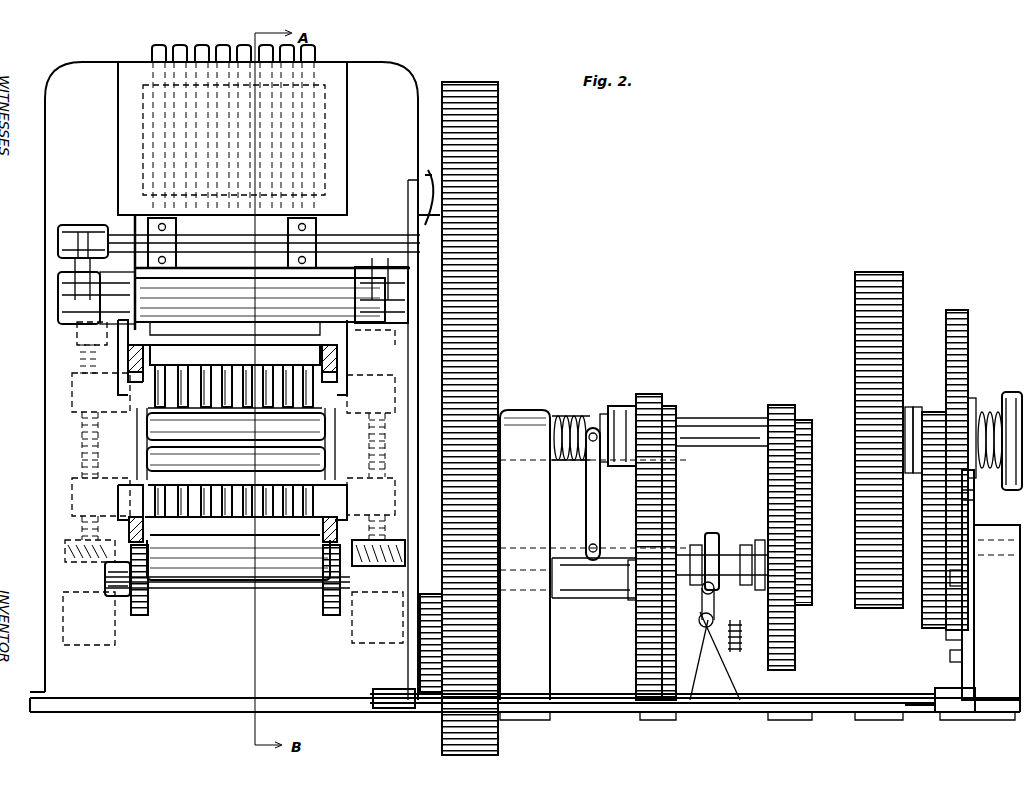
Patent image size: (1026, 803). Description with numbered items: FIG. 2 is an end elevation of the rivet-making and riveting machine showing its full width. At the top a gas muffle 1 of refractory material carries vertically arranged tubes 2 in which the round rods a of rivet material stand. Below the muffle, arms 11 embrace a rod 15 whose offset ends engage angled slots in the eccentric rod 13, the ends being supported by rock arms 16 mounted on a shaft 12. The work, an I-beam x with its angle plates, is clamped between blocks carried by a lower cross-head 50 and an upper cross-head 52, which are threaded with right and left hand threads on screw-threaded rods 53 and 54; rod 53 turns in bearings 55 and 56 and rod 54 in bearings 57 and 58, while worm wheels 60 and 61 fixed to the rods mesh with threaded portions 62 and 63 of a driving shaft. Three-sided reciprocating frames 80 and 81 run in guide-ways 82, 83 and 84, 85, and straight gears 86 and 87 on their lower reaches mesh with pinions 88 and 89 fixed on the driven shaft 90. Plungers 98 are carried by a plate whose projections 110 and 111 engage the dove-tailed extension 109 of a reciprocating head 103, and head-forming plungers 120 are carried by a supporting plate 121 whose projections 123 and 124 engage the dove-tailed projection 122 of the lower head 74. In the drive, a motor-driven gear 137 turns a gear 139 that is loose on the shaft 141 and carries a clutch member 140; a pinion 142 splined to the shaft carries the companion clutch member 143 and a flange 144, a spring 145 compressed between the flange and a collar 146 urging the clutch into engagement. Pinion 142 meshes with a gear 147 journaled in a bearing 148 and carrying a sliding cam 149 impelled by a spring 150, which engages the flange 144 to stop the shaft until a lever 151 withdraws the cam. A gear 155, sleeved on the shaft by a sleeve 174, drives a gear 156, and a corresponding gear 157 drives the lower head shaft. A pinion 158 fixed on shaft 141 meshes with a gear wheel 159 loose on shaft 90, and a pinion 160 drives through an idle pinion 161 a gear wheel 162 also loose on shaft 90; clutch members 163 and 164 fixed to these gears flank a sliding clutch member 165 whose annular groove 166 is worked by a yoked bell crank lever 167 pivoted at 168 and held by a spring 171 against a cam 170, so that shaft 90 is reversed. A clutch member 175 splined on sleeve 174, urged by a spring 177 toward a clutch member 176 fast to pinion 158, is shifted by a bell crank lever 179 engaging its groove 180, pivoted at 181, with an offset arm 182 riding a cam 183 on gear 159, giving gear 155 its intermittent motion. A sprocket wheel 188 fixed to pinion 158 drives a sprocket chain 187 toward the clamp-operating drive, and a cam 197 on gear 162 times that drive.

The gas muffle 1 is at (345, 160).
The tubes 2 is at (233, 120).
The arms 11 is at (186, 262).
The shaft 12 is at (236, 318).
The eccentric rod 13 is at (418, 215).
The rod 15 is at (345, 240).
The rock arms 16 is at (405, 300).
The cross-head 50 is at (72, 498).
The cross-head 52 is at (72, 392).
The screw-threaded rod 53 is at (80, 462).
The screw-threaded rod 54 is at (385, 445).
The bearing 55 is at (77, 335).
The bearing 56 is at (63, 605).
The bearing 57 is at (395, 338).
The bearing 58 is at (500, 628).
The worm wheel 60 is at (65, 550).
The worm wheel 61 is at (385, 527).
The threaded portion 62 is at (80, 526).
The threaded portion 63 is at (395, 495).
The head 74 is at (272, 545).
The reciprocating frame 80 is at (337, 358).
The reciprocating frame 81 is at (128, 358).
The guide-way 82 is at (337, 395).
The guide-way 83 is at (340, 500).
The guide-way 84 is at (128, 395).
The guide-way 85 is at (119, 502).
The straight gear 86 is at (312, 578).
The straight gear 87 is at (105, 578).
The pinion 88 is at (330, 615).
The pinion 89 is at (138, 615).
The driven shaft 90 is at (250, 588).
The plungers 98 is at (222, 412).
The head 103 is at (190, 330).
The dove-tailed extension 109 is at (255, 365).
The projection 110 is at (150, 350).
The projection 111 is at (312, 350).
The plungers 120 is at (240, 485).
The supporting plate 121 is at (225, 540).
The dove-tailed projection 122 is at (200, 540).
The projection 123 is at (163, 555).
The projection 124 is at (305, 540).
The gear 137 is at (960, 310).
The gear 139 is at (885, 262).
The clutch member 140 is at (909, 407).
The shaft 141 is at (705, 418).
The pinion 142 is at (930, 412).
The clutch member 143 is at (918, 407).
The flange 144 is at (972, 398).
The spring 145 is at (990, 412).
The collar 146 is at (1010, 392).
The gear 147 is at (946, 635).
The bearing 148 is at (990, 525).
The sliding cam 149 is at (950, 656).
The spring 150 is at (962, 578).
The lever 151 is at (974, 500).
The gear 155 is at (550, 395).
The gear 156 is at (498, 190).
The gear 157 is at (498, 742).
The pinion 158 is at (648, 394).
The gear wheel 159 is at (598, 468).
The pinion 160 is at (786, 392).
The idle pinion 161 is at (812, 495).
The gear wheel 162 is at (795, 665).
The clutch member 163 is at (742, 640).
The clutch member 164 is at (690, 615).
The sliding clutch member 165 is at (696, 545).
The annular groove 166 is at (712, 533).
The yoked bell crank lever 167 is at (720, 656).
The pivot 168 is at (703, 660).
The cam 170 is at (746, 545).
The spring 171 is at (728, 700).
The sleeve 174 is at (535, 460).
The clutch member 175 is at (608, 412).
The clutch member 176 is at (628, 406).
The spring 177 is at (570, 458).
The yoked bell crank lever 179 is at (600, 506).
The annular groove 180 is at (575, 414).
The pivot 181 is at (580, 570).
The offset arm 182 is at (600, 570).
The cam 183 is at (628, 600).
The sprocket chain 187 is at (676, 468).
The sprocket wheel 188 is at (676, 410).
The cam 197 is at (748, 620).
The rods a is at (230, 222).
The I-beam x is at (325, 437).